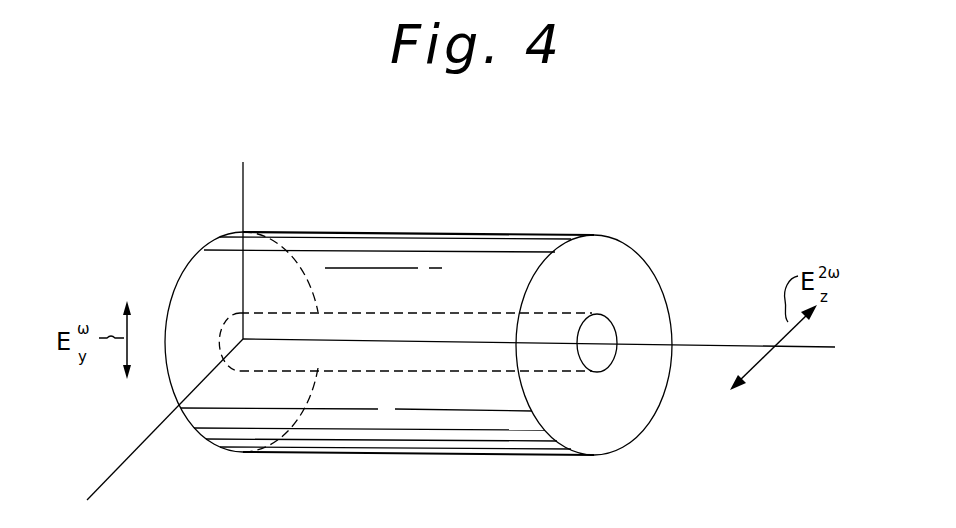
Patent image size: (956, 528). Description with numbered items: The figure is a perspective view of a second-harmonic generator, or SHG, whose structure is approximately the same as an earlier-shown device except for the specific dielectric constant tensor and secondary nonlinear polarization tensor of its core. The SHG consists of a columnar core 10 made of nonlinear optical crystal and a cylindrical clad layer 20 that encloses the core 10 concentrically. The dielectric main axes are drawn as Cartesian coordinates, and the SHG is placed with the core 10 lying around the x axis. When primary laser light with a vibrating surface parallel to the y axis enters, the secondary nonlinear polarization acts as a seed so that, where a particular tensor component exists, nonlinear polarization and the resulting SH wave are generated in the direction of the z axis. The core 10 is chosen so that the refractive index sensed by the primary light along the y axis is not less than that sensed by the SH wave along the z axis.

The clad layer 20 is at (625, 265).
The core 10 is at (602, 358).
The x axis x is at (547, 348).
The y axis y is at (241, 239).
The z axis z is at (151, 429).